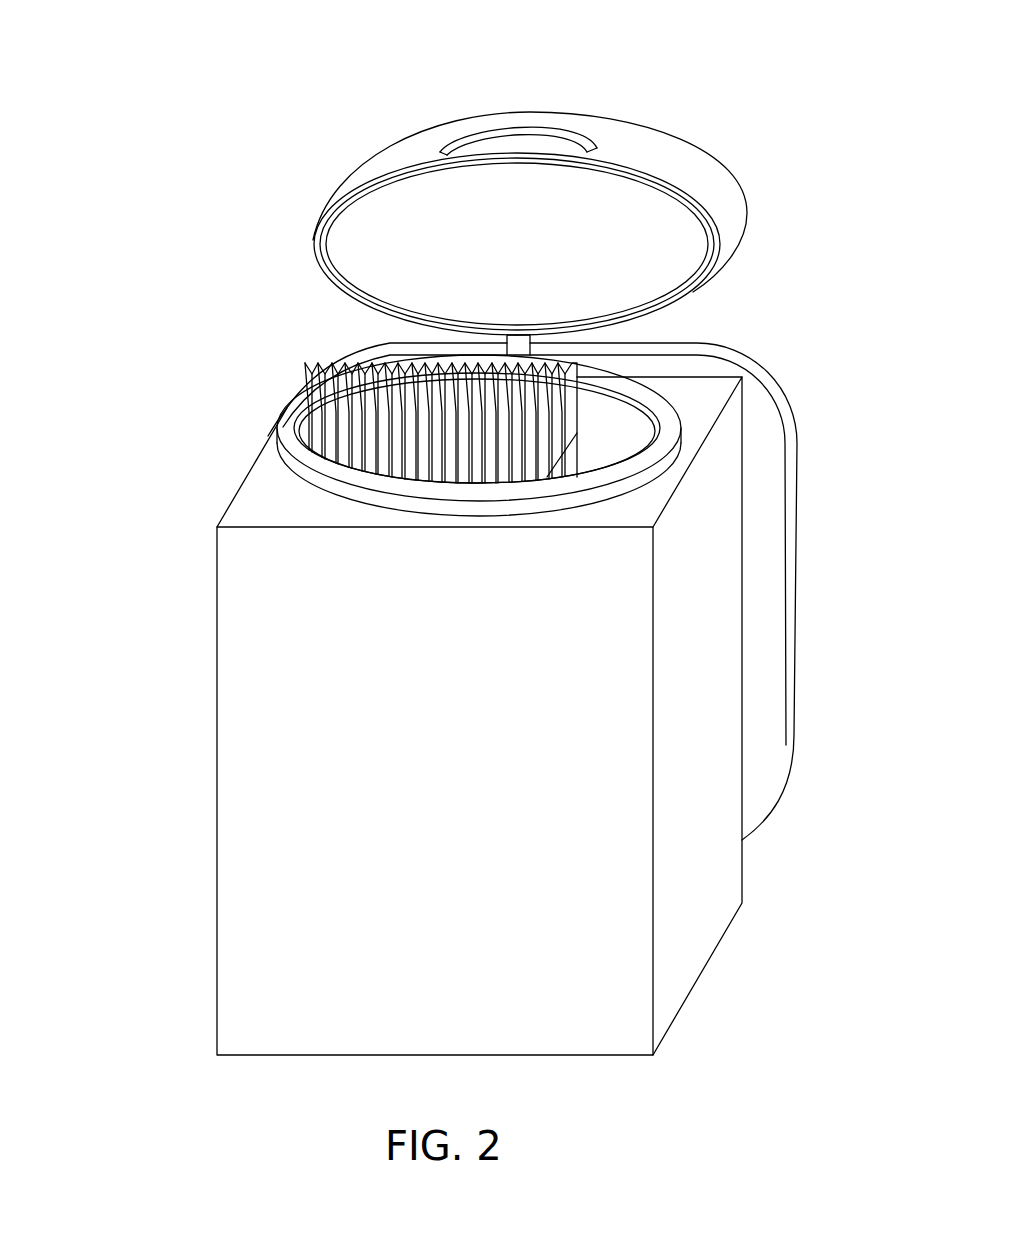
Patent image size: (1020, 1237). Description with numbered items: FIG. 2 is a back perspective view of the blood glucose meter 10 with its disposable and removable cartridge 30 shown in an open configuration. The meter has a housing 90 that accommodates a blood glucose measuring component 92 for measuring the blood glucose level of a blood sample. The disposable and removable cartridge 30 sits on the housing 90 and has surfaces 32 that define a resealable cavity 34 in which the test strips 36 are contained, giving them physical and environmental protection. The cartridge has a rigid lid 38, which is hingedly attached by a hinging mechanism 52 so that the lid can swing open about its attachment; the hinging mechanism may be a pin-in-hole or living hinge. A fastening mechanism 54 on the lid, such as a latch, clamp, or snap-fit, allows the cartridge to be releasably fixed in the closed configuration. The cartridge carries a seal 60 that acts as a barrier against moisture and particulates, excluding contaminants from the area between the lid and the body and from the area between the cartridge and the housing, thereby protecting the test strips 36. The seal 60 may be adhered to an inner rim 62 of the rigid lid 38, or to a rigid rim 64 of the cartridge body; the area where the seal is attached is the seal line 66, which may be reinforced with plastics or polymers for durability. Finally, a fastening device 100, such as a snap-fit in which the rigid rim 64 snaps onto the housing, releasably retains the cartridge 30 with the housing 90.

The blood glucose meter 10 is at (806, 372).
The disposable and removable cartridge 30 is at (730, 122).
The surfaces 32 is at (667, 413).
The resealable cavity 34 is at (645, 408).
The test strips 36 is at (335, 372).
The rigid lid 38 is at (733, 190).
The hinging mechanism 52 is at (518, 338).
The fastening mechanism 54 is at (553, 117).
The seal 60 is at (608, 162).
The inner rim 62 is at (687, 290).
The rigid rim 64 is at (283, 430).
The seal line 66 is at (323, 213).
The housing 90 is at (190, 750).
The blood glucose measuring component 92 is at (795, 683).
The fastening device 100 is at (258, 468).